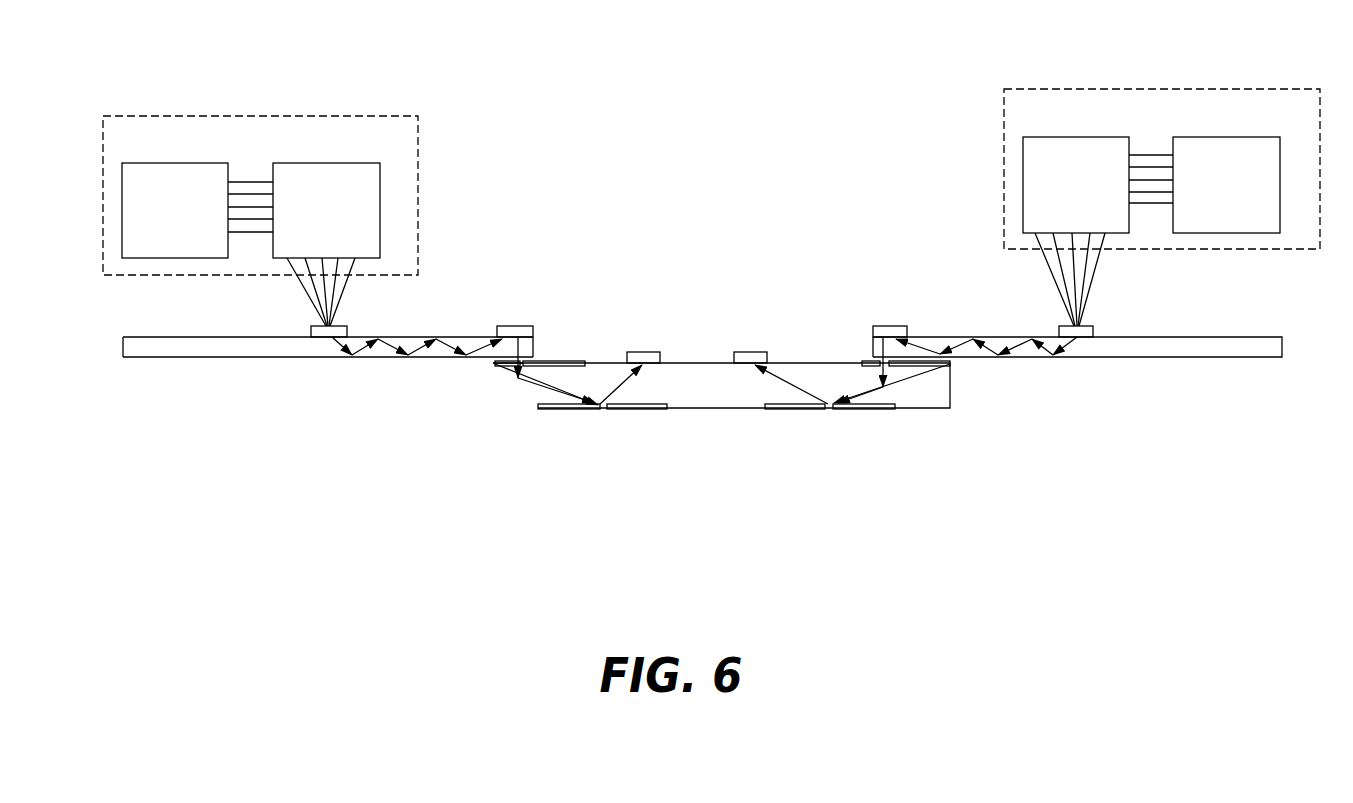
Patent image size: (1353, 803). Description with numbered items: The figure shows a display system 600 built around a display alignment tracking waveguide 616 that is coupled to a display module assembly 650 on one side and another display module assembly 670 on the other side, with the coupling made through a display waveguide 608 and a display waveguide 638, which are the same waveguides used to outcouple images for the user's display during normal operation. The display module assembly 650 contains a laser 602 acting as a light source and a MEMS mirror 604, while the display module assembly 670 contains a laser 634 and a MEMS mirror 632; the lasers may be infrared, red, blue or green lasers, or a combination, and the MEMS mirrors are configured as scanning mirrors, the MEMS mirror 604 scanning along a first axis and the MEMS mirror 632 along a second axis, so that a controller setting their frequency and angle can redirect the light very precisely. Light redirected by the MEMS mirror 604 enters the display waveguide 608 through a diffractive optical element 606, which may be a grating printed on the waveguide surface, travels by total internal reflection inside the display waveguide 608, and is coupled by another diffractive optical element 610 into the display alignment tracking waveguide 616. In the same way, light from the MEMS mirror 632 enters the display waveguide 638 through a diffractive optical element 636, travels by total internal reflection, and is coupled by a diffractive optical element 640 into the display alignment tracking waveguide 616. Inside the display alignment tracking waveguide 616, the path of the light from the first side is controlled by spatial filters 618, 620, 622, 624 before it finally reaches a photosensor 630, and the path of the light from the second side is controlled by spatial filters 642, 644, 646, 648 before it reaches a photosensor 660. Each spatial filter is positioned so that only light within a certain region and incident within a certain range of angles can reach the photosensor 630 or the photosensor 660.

The display system 600 is at (699, 595).
The laser 602 is at (162, 230).
The MEMS mirror 604 is at (313, 240).
The diffractive optical element 606 is at (347, 331).
The display waveguide 608 is at (233, 357).
The diffractive optical element 610 is at (512, 326).
The display alignment tracking waveguide 616 is at (708, 408).
The spatial filter 618 is at (493, 363).
The spatial filter 620 is at (560, 361).
The spatial filter 622 is at (547, 409).
The spatial filter 624 is at (638, 409).
The photosensor 630 is at (645, 352).
The MEMS mirror 632 is at (1063, 214).
The laser 634 is at (1213, 205).
The diffractive optical element 636 is at (1093, 331).
The display waveguide 638 is at (1172, 357).
The diffractive optical element 640 is at (892, 326).
The spatial filter 642 is at (950, 366).
The spatial filter 644 is at (867, 361).
The spatial filter 646 is at (853, 409).
The spatial filter 648 is at (797, 409).
The display module assembly 650 is at (418, 142).
The photosensor 660 is at (747, 352).
The display module assembly 670 is at (1217, 89).